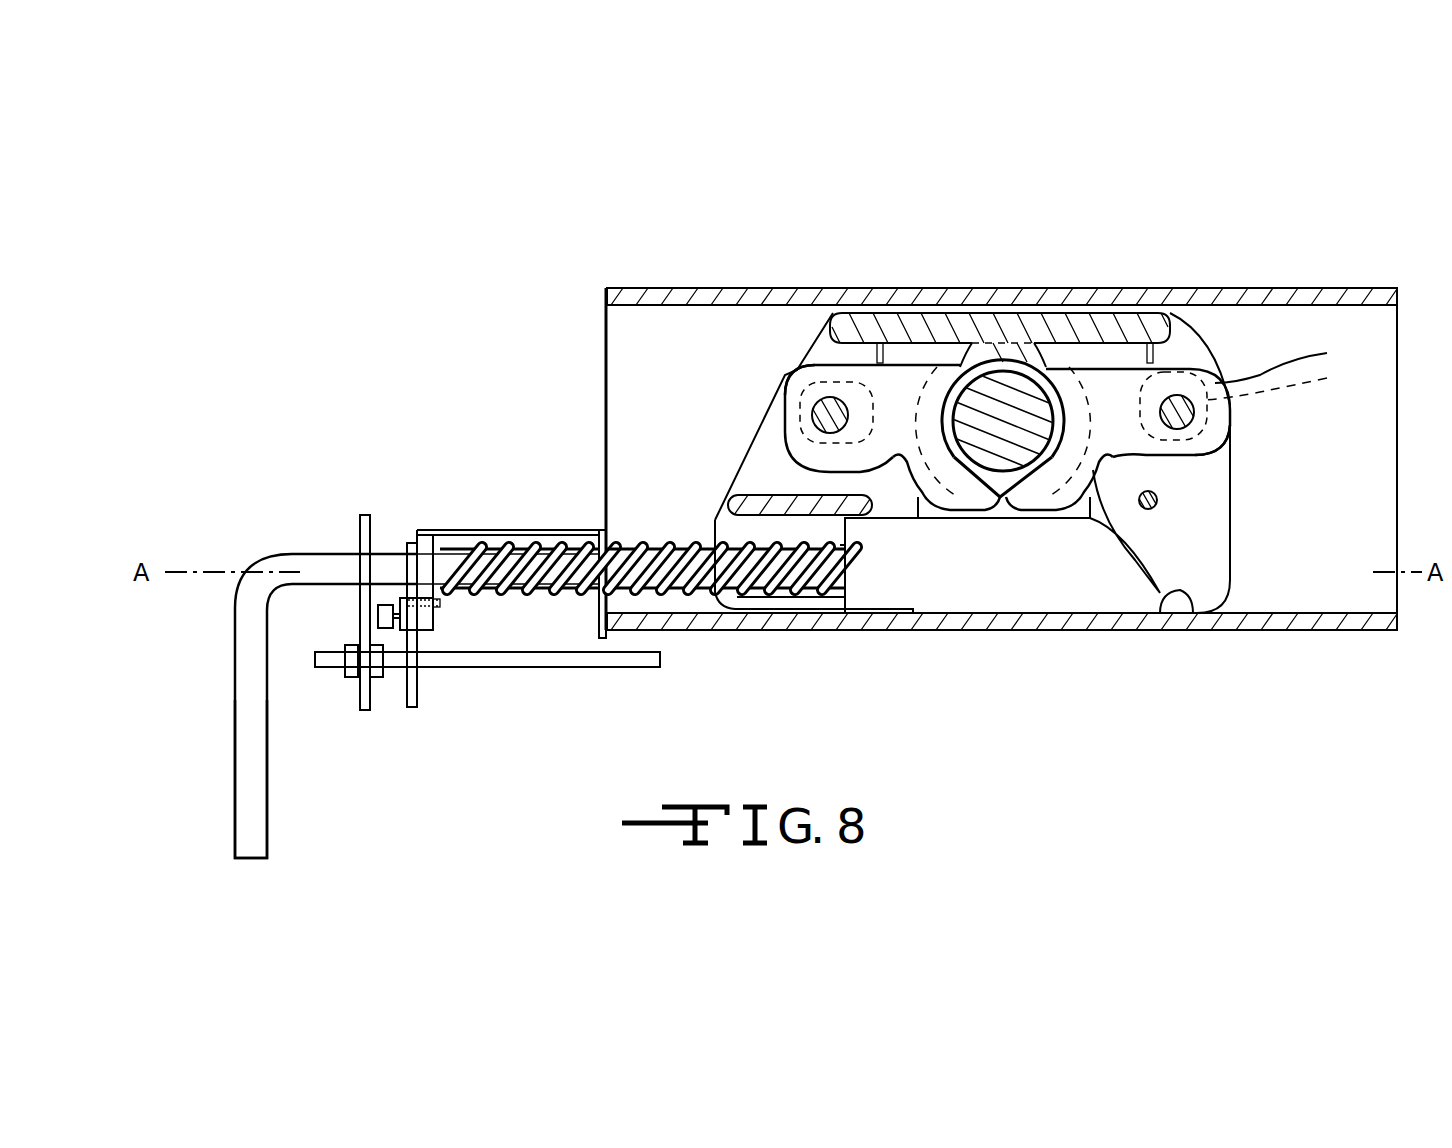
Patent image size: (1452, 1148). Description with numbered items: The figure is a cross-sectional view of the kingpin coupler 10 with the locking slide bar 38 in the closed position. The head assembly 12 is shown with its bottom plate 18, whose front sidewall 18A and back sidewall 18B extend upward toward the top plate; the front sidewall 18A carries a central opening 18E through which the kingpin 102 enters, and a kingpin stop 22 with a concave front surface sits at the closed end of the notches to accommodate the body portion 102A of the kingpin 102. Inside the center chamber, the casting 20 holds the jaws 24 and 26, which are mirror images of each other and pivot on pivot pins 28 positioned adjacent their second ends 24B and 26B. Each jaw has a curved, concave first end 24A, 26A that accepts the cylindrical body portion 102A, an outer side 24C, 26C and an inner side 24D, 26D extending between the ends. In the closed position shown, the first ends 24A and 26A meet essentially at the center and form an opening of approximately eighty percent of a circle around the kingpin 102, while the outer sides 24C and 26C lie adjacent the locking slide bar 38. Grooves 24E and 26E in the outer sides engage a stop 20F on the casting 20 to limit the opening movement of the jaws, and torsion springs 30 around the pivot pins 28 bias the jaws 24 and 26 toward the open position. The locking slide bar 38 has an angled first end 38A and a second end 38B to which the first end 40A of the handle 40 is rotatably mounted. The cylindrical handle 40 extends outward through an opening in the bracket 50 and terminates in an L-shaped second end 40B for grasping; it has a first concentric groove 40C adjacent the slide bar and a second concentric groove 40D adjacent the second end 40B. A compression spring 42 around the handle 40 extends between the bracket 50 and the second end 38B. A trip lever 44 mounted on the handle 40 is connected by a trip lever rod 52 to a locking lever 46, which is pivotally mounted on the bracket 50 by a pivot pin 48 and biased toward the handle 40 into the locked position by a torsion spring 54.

The kingpin coupler 10 is at (914, 185).
The head assembly 12 is at (697, 280).
The bottom plate 18 is at (655, 365).
The front sidewall 18A is at (1327, 630).
The back sidewall 18B is at (758, 288).
The opening 18E is at (1080, 632).
The casting 20 is at (1210, 375).
The stop 20F is at (1158, 498).
The kingpin stop 22 is at (958, 325).
The jaw 24 is at (783, 397).
The first end of jaw 24A is at (1005, 510).
The second end of jaw 24B is at (793, 382).
The outer side of jaw 24C is at (958, 500).
The inner side of jaw 24D is at (898, 367).
The groove 24E is at (893, 477).
The jaw 26 is at (1230, 420).
The first end of jaw 26A is at (1063, 377).
The second end of jaw 26B is at (1205, 450).
The outer side of jaw 26C is at (1043, 503).
The inner side of jaw 26D is at (1185, 353).
The groove 26E is at (1140, 540).
The pivot pin 28 is at (1288, 363).
The spring 30 is at (1288, 384).
The locking slide bar 38 is at (995, 592).
The first end of locking slide bar 38A is at (1193, 613).
The second end of locking slide bar 38B is at (838, 613).
The handle 40 is at (233, 622).
The first end of handle 40A is at (845, 583).
The second end of handle 40B is at (233, 757).
The first concentric groove 40C is at (652, 543).
The second concentric groove 40D is at (430, 530).
The spring 42 is at (738, 609).
The trip lever 44 is at (363, 712).
The locking lever 46 is at (413, 712).
The pivot pin 48 is at (380, 615).
The bracket 50 is at (430, 525).
The trip lever rod 52 is at (513, 662).
The torsion spring 54 is at (440, 600).
The kingpin 102 is at (1160, 370).
The body portion of kingpin 102A is at (997, 393).